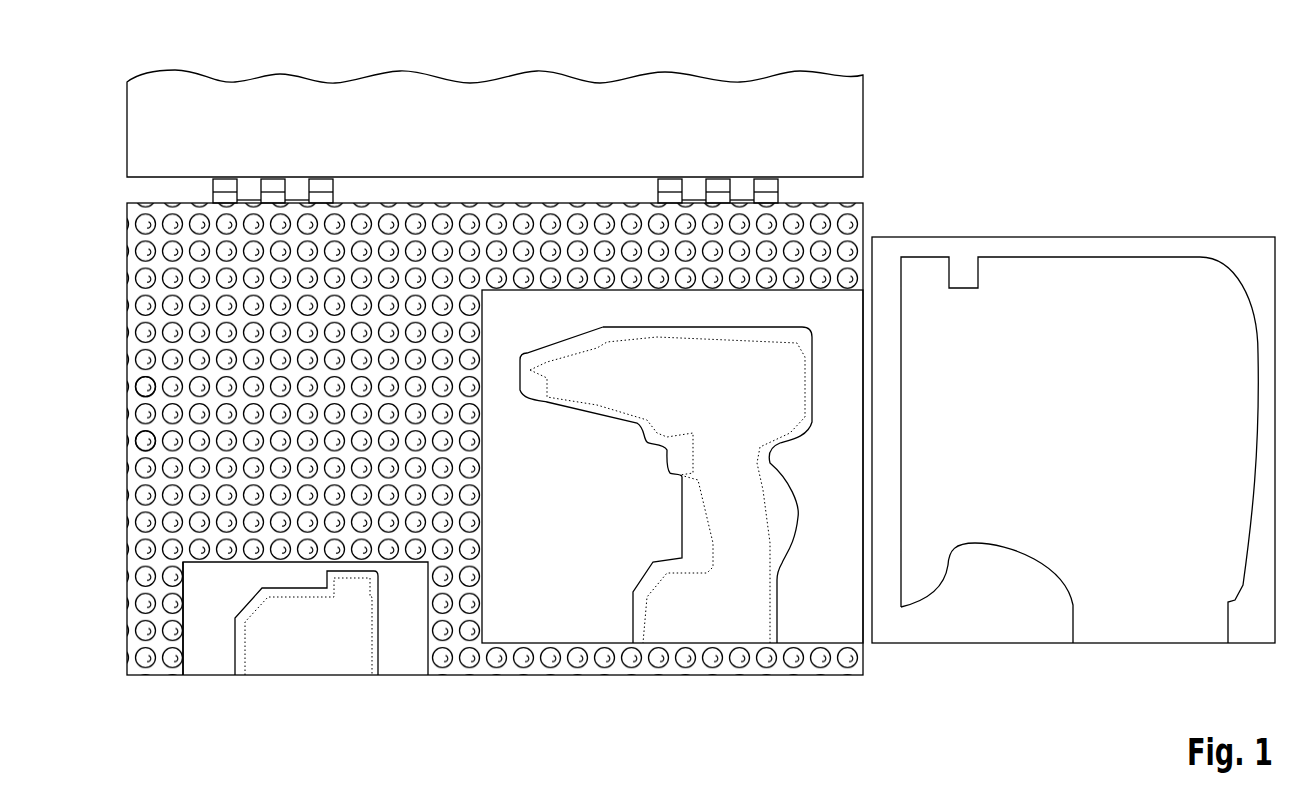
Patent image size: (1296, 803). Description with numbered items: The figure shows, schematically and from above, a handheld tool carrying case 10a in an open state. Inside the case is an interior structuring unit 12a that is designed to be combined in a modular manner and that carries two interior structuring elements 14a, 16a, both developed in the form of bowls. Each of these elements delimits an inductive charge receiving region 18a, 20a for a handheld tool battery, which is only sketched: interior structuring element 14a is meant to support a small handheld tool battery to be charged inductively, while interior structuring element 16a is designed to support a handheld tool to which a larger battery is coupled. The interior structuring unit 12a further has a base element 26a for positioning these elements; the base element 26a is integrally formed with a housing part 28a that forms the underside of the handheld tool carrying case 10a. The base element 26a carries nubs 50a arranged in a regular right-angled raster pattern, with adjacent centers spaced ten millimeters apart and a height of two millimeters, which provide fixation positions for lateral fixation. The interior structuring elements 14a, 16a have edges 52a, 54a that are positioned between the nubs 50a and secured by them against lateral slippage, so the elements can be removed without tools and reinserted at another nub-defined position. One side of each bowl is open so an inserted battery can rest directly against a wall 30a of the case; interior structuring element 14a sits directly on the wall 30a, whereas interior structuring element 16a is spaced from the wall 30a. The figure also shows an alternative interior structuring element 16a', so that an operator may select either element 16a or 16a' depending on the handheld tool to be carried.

The handheld tool carrying case 10a is at (872, 222).
The interior structuring unit 12a is at (104, 270).
The interior structuring element 14a is at (198, 576).
The interior structuring element 16a is at (672, 516).
The interior structuring element 16a' is at (1073, 412).
The inductive charge receiving region 18a is at (276, 658).
The inductive charge receiving region 20a is at (775, 616).
The base element 26a is at (155, 427).
The housing part 28a is at (150, 396).
The wall 30a is at (480, 678).
The nubs 50a is at (383, 222).
The edge 52a is at (182, 591).
The edge 54a is at (643, 290).